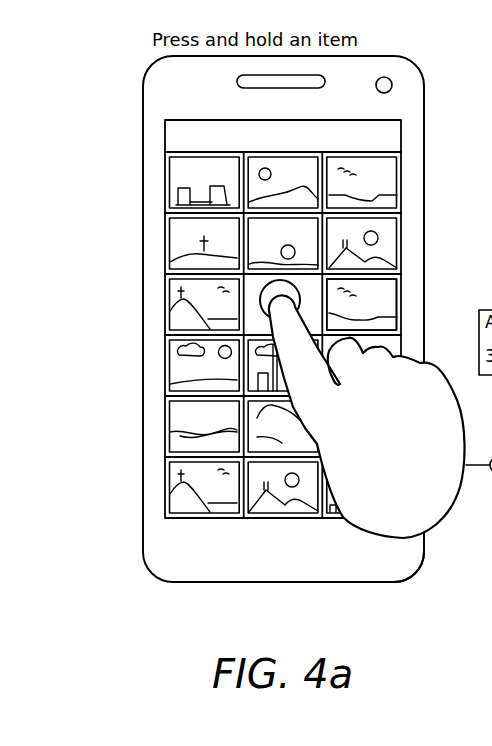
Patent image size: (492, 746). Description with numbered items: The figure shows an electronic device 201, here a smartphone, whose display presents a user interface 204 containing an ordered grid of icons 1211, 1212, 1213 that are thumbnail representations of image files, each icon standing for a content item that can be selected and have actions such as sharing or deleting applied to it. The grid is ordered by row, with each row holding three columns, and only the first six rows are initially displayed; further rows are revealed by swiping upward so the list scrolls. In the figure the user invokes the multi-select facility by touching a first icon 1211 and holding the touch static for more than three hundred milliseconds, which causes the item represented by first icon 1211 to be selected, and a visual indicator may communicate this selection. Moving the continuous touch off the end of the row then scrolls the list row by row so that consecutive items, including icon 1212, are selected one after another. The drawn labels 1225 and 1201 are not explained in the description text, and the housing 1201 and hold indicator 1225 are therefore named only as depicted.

The electronic device 201 is at (148, 73).
The user interface 204 is at (188, 120).
The first icon 1211 is at (253, 290).
The icon 1212 is at (255, 365).
The icon 1213 is at (387, 290).
The hold gesture indicator 1225 is at (413, 470).
The device housing 1201 is at (282, 583).